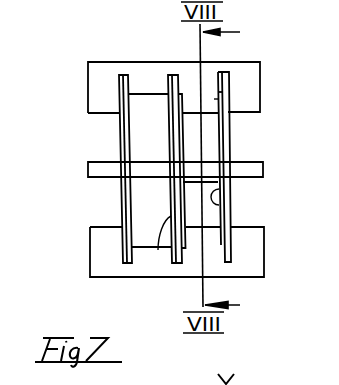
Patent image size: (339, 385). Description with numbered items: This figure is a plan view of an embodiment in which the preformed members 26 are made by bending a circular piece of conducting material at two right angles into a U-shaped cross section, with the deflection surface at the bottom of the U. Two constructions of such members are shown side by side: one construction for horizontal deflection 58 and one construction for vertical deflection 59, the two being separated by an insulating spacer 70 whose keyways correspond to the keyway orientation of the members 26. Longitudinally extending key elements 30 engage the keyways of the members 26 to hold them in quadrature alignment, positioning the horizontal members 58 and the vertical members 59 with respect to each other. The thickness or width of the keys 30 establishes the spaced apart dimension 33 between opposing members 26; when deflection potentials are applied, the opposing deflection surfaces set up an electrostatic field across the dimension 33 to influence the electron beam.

The preformed member 26 is at (151, 106).
The key element 30 is at (261, 88).
The spaced apart dimension 33 is at (233, 163).
The horizontal deflection construction 58 is at (158, 250).
The vertical deflection construction 59 is at (214, 99).
The insulating spacer 70 is at (222, 72).